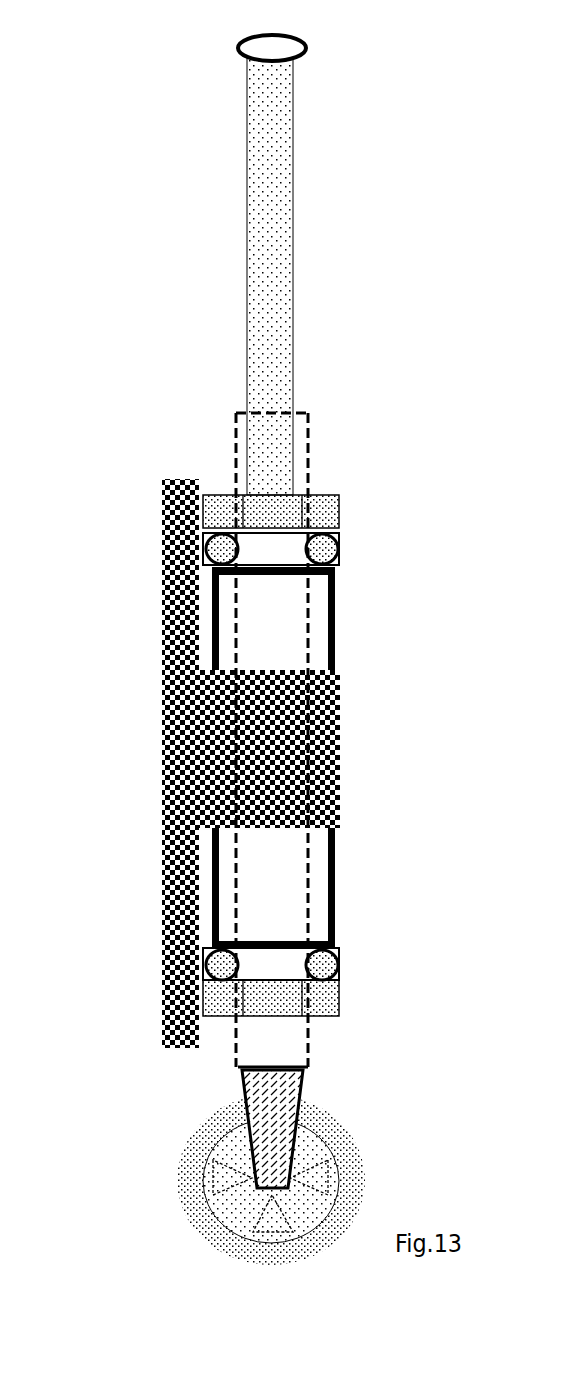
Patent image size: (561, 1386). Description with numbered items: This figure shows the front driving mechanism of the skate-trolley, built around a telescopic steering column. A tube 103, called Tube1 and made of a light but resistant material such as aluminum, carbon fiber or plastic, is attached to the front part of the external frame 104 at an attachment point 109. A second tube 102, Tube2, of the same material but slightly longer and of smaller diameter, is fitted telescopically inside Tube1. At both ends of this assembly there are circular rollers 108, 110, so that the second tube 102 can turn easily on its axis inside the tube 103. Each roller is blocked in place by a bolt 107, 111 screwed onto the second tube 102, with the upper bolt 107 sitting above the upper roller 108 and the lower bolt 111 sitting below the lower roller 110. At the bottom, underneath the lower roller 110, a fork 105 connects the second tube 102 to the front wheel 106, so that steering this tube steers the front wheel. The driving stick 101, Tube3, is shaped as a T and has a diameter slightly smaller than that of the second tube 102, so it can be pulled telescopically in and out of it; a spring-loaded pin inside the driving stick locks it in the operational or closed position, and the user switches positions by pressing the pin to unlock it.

The driving stick 101 is at (270, 274).
The second tube 102 is at (230, 445).
The tube 103 is at (218, 632).
The external frame 104 is at (168, 815).
The fork 105 is at (260, 1095).
The front wheel 106 is at (220, 1233).
The bolt 107 is at (339, 512).
The circular roller 108 is at (341, 549).
The attachment point 109 is at (280, 770).
The circular roller 110 is at (342, 955).
The bolt 111 is at (343, 1003).